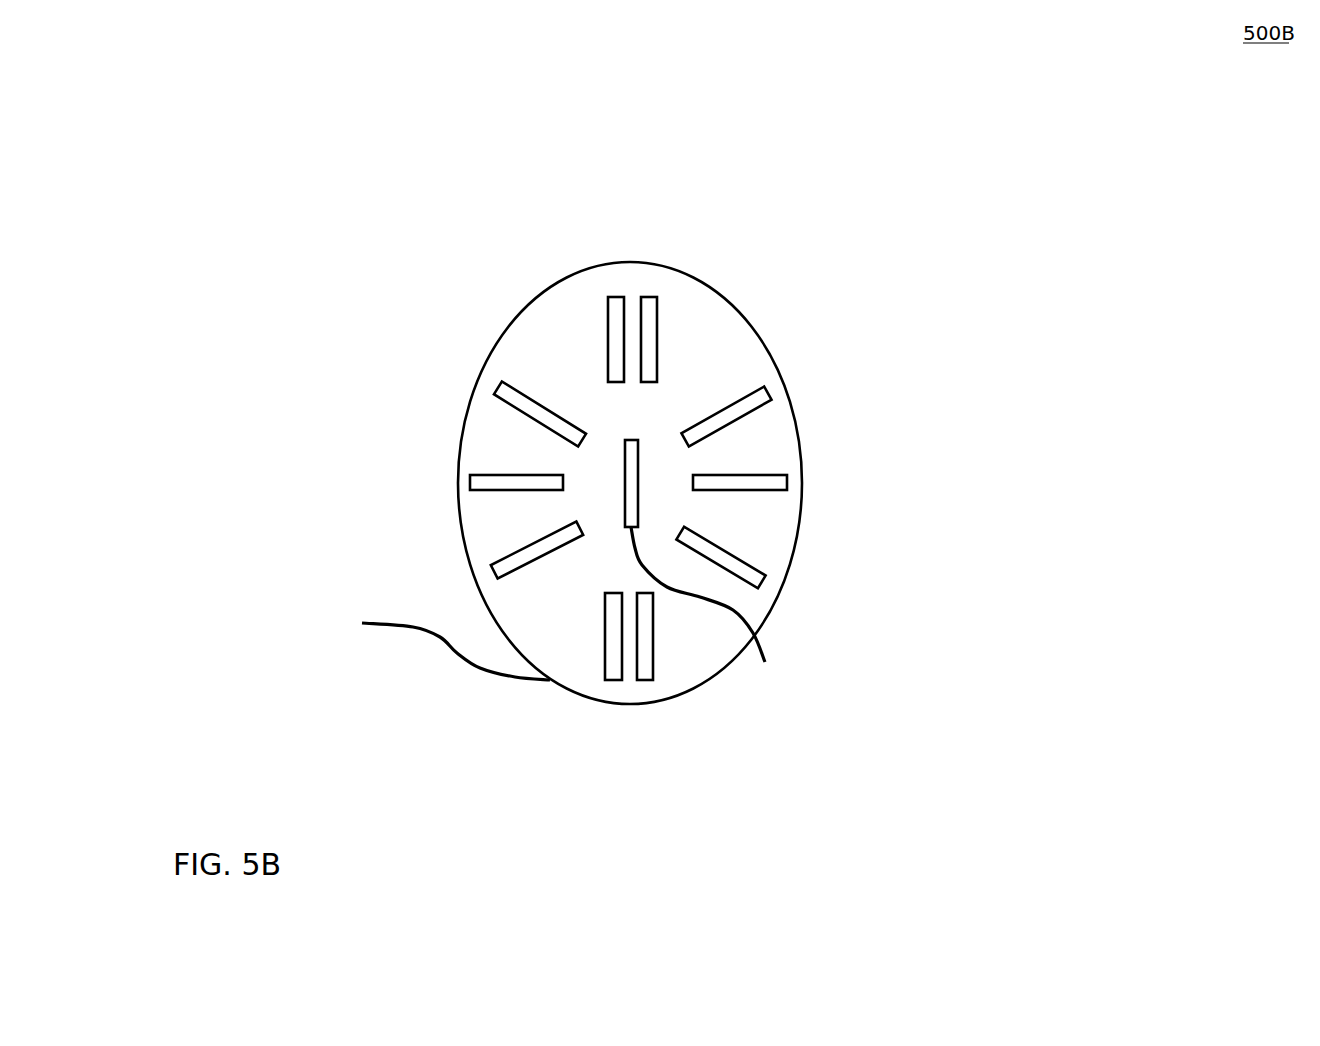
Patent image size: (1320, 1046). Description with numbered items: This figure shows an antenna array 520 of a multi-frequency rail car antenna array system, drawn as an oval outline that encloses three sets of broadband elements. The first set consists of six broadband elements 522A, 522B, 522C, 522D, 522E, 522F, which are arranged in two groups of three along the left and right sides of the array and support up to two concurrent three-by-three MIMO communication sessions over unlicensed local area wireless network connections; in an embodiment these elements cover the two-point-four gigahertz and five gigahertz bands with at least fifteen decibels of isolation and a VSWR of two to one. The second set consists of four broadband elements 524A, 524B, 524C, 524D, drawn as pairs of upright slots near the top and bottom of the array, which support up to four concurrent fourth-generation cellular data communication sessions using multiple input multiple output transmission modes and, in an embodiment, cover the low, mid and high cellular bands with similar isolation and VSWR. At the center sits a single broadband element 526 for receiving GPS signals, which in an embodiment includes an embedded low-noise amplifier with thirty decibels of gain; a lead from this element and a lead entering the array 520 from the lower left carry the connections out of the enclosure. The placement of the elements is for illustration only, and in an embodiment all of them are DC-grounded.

The antenna array 520 is at (428, 646).
The broadband element 522A is at (540, 414).
The broadband element 522B is at (516, 482).
The broadband element 522C is at (537, 550).
The broadband element 522D is at (726, 417).
The broadband element 522E is at (740, 482).
The broadband element 522F is at (720, 558).
The broadband element 524A is at (616, 339).
The broadband element 524B is at (649, 339).
The broadband element 524C is at (613, 636).
The broadband element 524D is at (645, 636).
The broadband element 526 is at (712, 571).